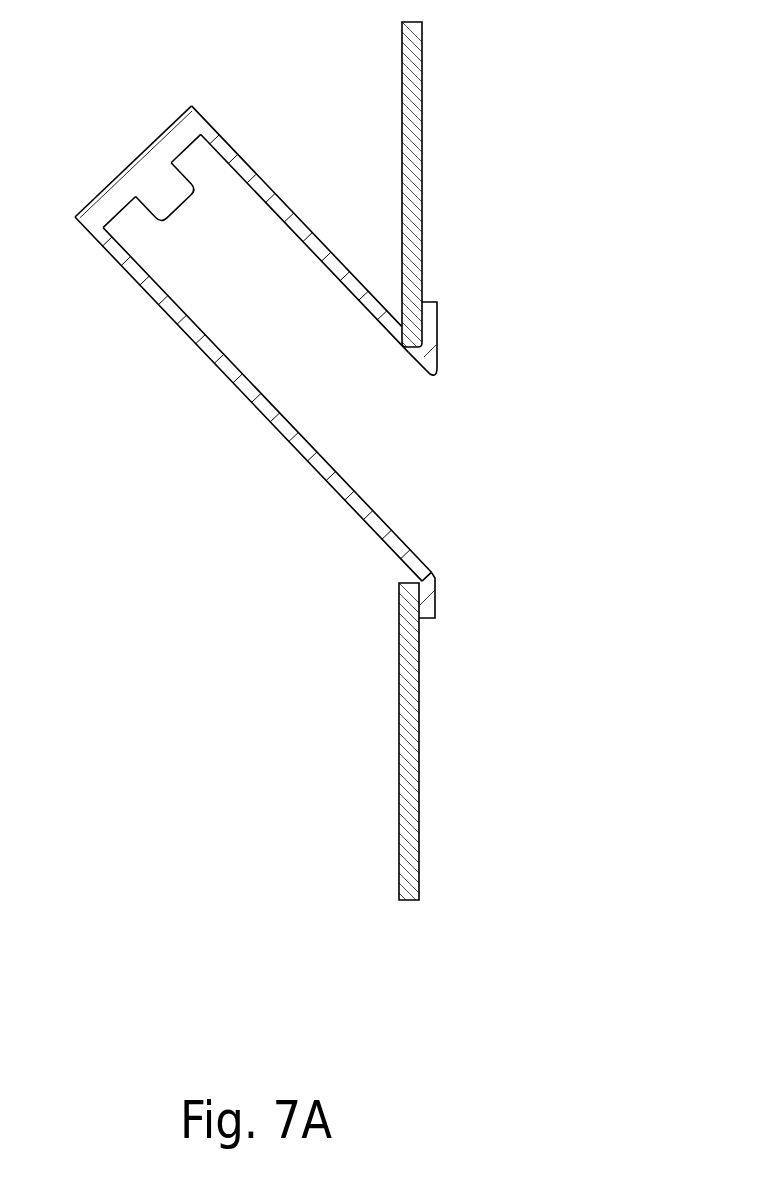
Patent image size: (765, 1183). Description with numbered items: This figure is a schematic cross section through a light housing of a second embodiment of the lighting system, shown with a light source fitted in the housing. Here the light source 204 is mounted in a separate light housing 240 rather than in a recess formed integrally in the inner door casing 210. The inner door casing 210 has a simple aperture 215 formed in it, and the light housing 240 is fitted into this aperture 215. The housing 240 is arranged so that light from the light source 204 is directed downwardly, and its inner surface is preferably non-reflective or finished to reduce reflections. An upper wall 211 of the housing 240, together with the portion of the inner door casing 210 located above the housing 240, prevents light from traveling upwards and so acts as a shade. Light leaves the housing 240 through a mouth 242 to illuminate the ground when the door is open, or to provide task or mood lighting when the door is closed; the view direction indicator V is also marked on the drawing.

The light source 204 is at (165, 193).
The inner door casing 210 is at (423, 127).
The upper wall 211 is at (332, 275).
The aperture 215 is at (416, 582).
The light housing 240 is at (145, 292).
The mouth 242 is at (423, 500).
The view arrow V is at (562, 653).